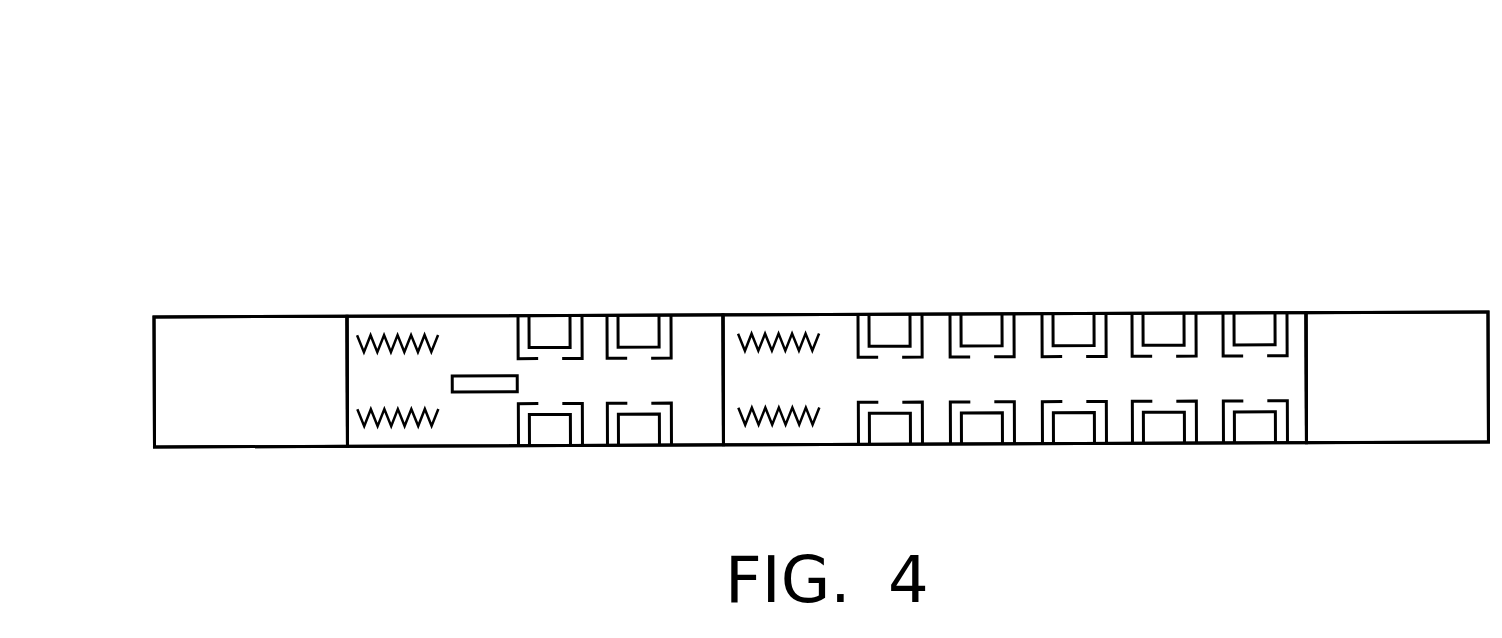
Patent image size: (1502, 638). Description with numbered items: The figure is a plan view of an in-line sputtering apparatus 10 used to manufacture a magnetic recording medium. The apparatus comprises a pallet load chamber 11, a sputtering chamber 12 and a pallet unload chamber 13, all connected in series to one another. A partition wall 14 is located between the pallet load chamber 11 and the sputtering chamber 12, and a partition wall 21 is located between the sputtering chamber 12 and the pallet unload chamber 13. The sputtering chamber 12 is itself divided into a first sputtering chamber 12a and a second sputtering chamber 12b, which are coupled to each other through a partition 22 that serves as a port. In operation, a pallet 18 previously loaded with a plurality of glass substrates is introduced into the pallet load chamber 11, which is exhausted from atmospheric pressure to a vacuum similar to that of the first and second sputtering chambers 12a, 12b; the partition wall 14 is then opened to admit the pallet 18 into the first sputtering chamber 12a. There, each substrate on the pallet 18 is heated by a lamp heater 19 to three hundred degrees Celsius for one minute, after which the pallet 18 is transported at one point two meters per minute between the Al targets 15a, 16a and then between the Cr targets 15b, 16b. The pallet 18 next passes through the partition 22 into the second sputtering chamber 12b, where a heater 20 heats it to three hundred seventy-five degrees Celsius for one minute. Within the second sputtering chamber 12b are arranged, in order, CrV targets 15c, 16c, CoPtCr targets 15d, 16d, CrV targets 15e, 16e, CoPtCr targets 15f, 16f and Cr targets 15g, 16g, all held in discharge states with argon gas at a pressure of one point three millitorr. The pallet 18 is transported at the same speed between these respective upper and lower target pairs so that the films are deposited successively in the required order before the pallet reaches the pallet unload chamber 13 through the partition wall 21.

The in-line sputtering apparatus 10 is at (972, 116).
The pallet load chamber 11 is at (285, 323).
The sputtering chamber 12 is at (826, 282).
The first sputtering chamber 12a is at (698, 322).
The second sputtering chamber 12b is at (840, 322).
The pallet unload chamber 13 is at (1386, 322).
The partition wall 14 is at (348, 441).
The target 15a is at (552, 323).
The target 15b is at (641, 323).
The CrV target 15c is at (893, 322).
The CoPtCr target 15d is at (985, 322).
The CrV target 15e is at (1076, 322).
The CoPtCr target 15f is at (1166, 322).
The Cr target 15g is at (1257, 322).
The target 16a is at (516, 441).
The target 16b is at (607, 441).
The CrV target 16c is at (858, 441).
The CoPtCr target 16d is at (950, 441).
The CrV target 16e is at (1042, 441).
The CoPtCr target 16f is at (1131, 439).
The Cr target 16g is at (1222, 439).
The pallet 18 is at (460, 385).
The lamp heater 19 is at (385, 437).
The heater 20 is at (772, 437).
The partition wall 21 is at (1306, 441).
The partition 22 is at (723, 441).